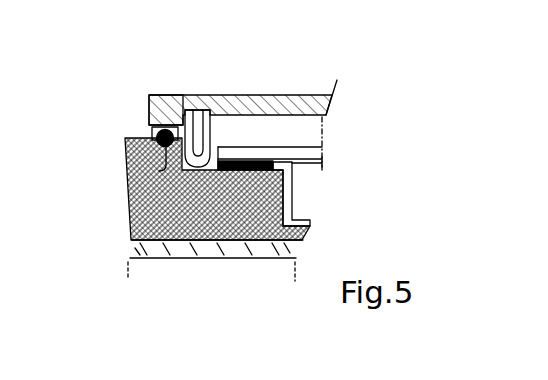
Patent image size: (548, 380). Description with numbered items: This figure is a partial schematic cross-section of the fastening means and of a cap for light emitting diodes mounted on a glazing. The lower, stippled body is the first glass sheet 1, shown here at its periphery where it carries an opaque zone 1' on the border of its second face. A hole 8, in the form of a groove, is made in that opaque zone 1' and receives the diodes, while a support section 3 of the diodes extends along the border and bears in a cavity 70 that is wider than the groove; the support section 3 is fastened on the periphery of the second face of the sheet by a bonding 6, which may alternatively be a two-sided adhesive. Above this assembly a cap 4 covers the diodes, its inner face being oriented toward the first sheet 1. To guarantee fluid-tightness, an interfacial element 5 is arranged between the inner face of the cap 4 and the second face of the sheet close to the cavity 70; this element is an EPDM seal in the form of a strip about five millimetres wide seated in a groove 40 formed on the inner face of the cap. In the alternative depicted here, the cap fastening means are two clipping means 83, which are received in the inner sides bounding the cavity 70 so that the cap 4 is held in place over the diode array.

The first glass sheet 1 is at (215, 280).
The opaque zone 1' is at (194, 192).
The support section 3 is at (275, 150).
The cap 4 is at (177, 100).
The interfacial element 5 is at (160, 171).
The bonding 6 is at (238, 161).
The hole 8 is at (283, 193).
The groove 40 is at (148, 130).
The cavity 70 is at (307, 129).
The clipping means 83 is at (196, 110).